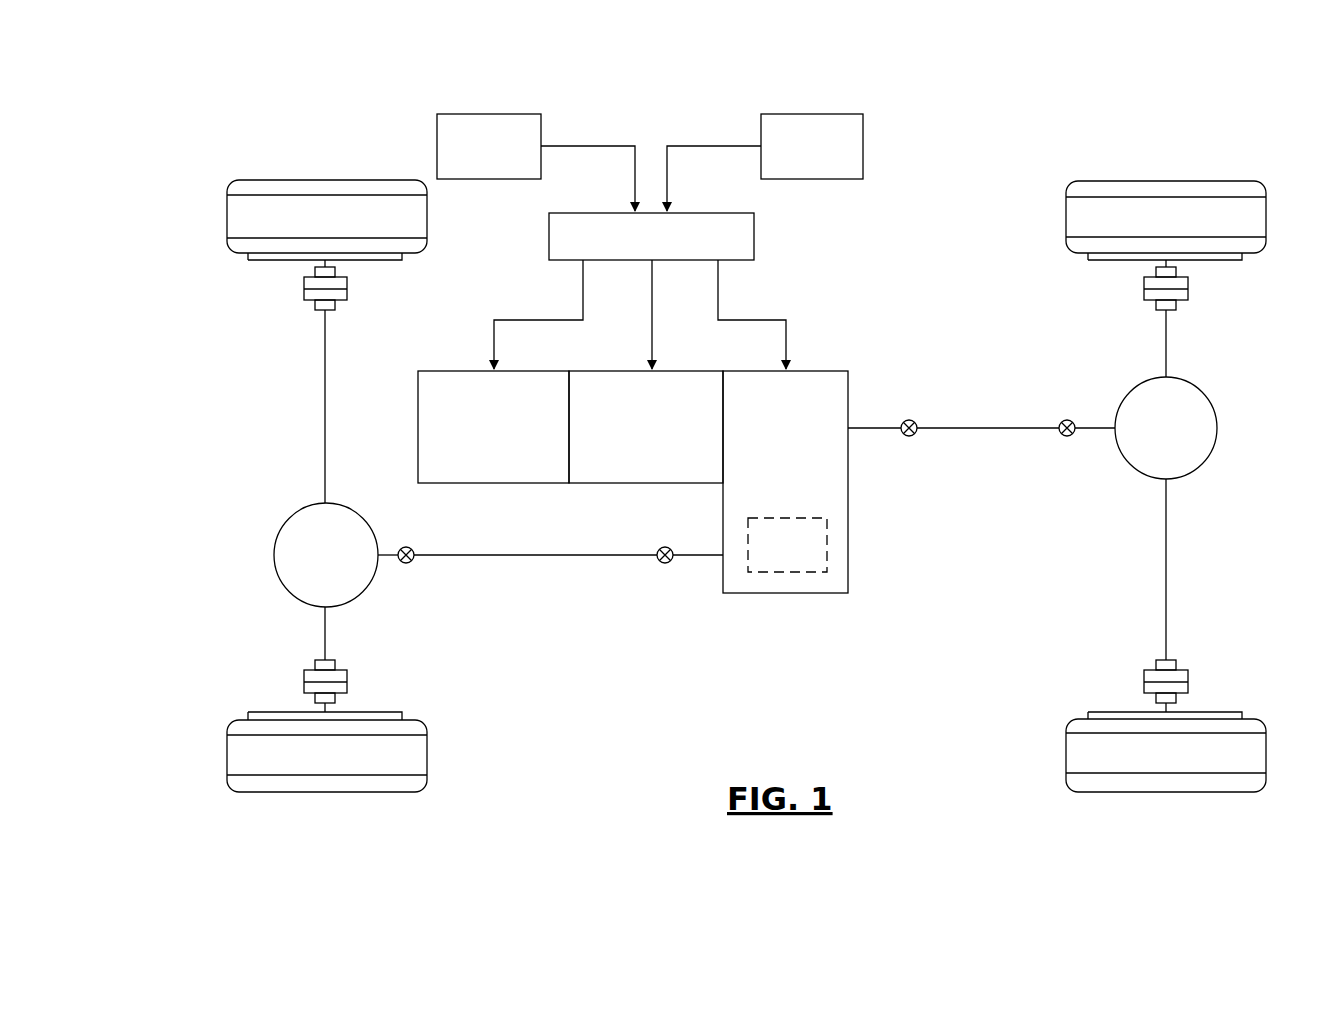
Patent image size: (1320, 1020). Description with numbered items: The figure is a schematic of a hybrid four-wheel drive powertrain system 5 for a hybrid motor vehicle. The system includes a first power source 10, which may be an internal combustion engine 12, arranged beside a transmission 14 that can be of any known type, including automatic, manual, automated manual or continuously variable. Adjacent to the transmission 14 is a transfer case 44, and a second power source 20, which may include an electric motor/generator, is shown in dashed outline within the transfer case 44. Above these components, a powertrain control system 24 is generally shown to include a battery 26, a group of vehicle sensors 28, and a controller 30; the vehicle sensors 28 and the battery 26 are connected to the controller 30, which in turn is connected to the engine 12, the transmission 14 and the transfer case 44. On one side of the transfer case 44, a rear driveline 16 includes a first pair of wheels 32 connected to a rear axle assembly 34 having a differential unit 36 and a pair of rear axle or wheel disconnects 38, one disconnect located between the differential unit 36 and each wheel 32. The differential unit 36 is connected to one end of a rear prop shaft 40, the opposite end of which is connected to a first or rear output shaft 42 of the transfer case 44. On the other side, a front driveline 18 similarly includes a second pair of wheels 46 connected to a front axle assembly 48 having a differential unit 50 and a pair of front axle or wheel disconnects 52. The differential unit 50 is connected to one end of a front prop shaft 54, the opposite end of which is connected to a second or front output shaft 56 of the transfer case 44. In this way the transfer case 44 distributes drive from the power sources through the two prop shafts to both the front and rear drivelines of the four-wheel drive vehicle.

The hybrid four-wheel drive powertrain system 5 is at (596, 679).
The first power source 10 is at (452, 349).
The internal combustion engine 12 is at (495, 485).
The transmission 14 is at (632, 485).
The rear driveline 16 is at (1007, 517).
The front driveline 18 is at (472, 594).
The second power source 20 is at (830, 548).
The powertrain control system 24 is at (668, 110).
The battery 26 is at (811, 114).
The vehicle sensors 28 is at (489, 114).
The controller 30 is at (755, 236).
The first pair of wheels 32 is at (1066, 214).
The rear axle assembly 34 is at (1169, 585).
The differential unit 36 is at (1196, 391).
The rear axle or wheel disconnects 38 is at (1144, 286).
The rear prop shaft 40 is at (1023, 430).
The rear output shaft 42 is at (873, 430).
The transfer case 44 is at (828, 383).
The second pair of wheels 46 is at (227, 214).
The front axle assembly 48 is at (323, 370).
The differential unit 50 is at (357, 597).
The front axle or wheel disconnects 52 is at (304, 286).
The front prop shaft 54 is at (563, 557).
The front output shaft 56 is at (695, 557).